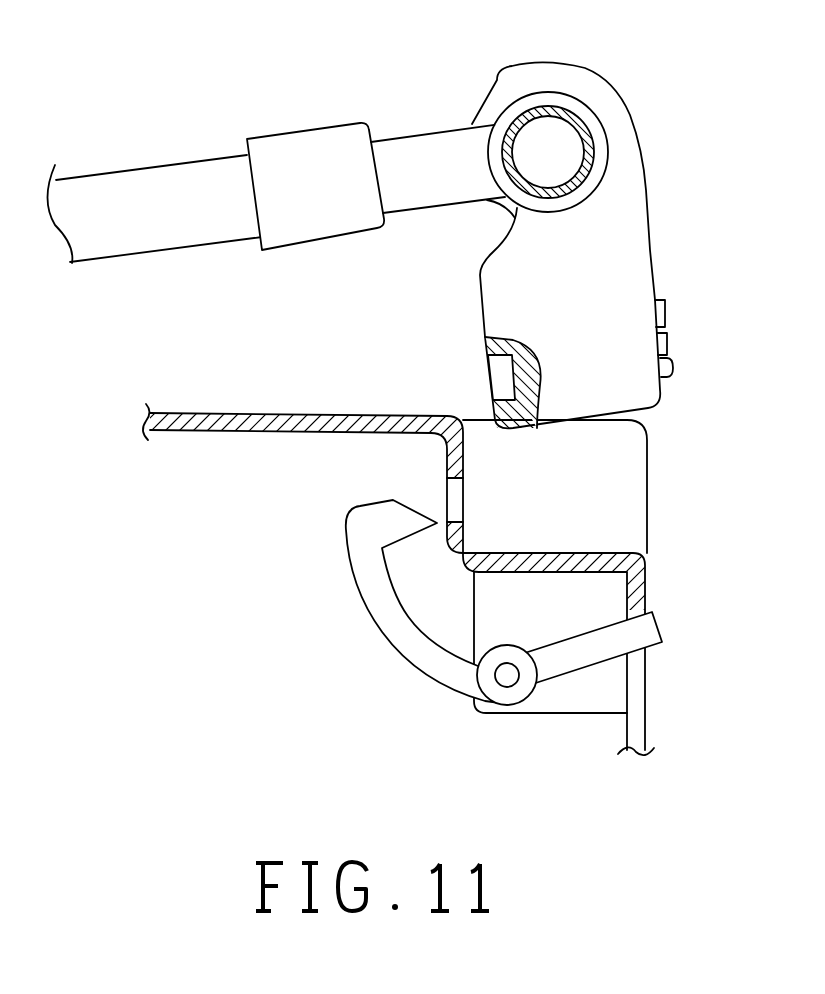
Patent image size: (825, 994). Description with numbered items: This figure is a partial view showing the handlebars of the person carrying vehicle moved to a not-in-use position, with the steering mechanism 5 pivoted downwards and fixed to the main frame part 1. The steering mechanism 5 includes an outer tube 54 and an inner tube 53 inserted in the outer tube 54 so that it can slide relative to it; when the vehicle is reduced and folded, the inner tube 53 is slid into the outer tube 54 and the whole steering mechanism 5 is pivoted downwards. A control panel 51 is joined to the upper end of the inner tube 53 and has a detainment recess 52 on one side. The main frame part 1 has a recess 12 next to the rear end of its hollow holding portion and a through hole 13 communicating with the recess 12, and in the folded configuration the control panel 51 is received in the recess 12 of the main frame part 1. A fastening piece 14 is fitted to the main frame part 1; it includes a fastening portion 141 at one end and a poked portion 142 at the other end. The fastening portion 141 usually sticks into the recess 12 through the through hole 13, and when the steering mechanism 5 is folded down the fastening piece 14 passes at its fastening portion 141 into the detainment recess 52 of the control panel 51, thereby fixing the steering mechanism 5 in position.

The main frame part 1 is at (258, 418).
The steering mechanism 5 is at (277, 141).
The recess 12 is at (590, 490).
The through hole 13 is at (453, 498).
The fastening piece 14 is at (524, 638).
The fastening portion 141 is at (363, 535).
The poked portion 142 is at (635, 642).
The control panel 51 is at (630, 262).
The detainment recess 52 is at (498, 382).
The inner tube 53 is at (413, 147).
The outer tube 54 is at (186, 177).